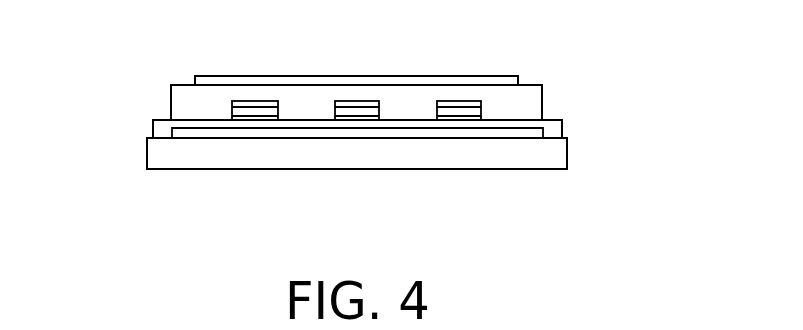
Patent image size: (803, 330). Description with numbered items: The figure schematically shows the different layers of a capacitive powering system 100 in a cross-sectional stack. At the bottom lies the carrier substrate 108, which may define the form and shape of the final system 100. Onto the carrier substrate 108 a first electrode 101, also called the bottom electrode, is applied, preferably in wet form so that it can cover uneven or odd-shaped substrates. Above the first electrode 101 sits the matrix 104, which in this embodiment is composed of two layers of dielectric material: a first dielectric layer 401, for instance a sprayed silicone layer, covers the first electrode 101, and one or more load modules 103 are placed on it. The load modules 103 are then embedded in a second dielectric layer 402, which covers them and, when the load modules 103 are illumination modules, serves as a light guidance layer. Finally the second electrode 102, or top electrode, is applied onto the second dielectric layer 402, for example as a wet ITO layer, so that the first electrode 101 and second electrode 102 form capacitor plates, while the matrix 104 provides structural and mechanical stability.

The capacitive powering system 100 is at (127, 87).
The first electrode 101 is at (513, 133).
The second electrode 102 is at (409, 80).
The load module 103 is at (255, 110).
The matrix 104 is at (441, 150).
The carrier substrate 108 is at (308, 162).
The first dielectric layer 401 is at (556, 130).
The second dielectric layer 402 is at (538, 104).